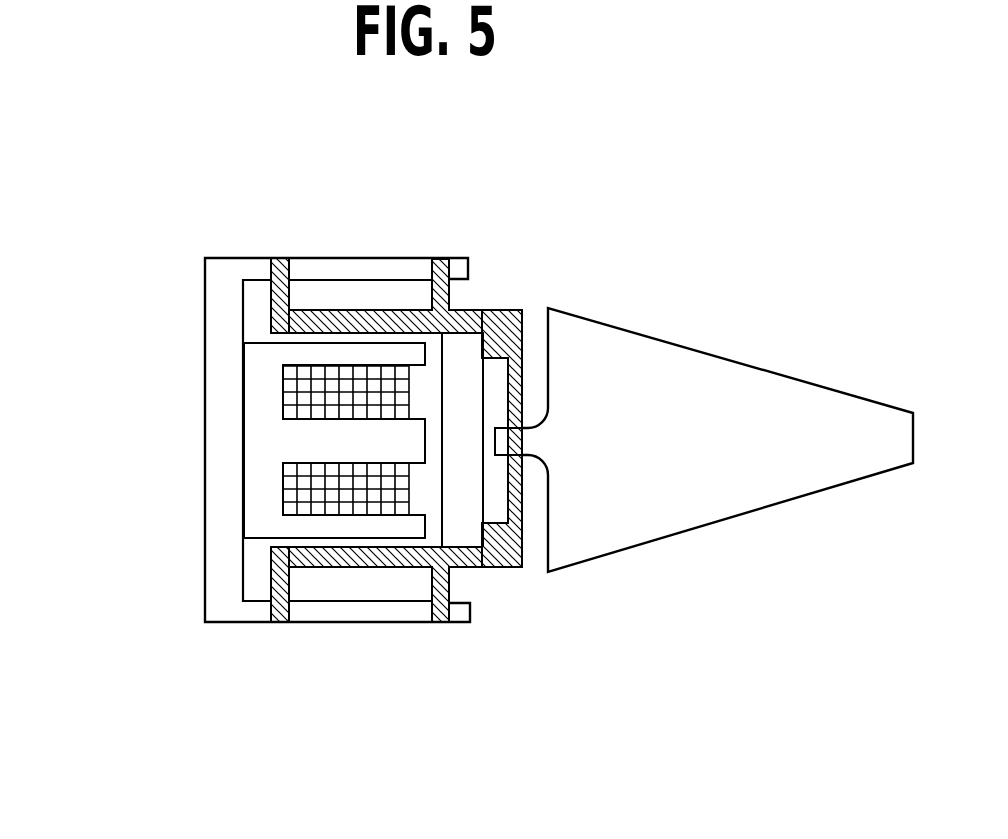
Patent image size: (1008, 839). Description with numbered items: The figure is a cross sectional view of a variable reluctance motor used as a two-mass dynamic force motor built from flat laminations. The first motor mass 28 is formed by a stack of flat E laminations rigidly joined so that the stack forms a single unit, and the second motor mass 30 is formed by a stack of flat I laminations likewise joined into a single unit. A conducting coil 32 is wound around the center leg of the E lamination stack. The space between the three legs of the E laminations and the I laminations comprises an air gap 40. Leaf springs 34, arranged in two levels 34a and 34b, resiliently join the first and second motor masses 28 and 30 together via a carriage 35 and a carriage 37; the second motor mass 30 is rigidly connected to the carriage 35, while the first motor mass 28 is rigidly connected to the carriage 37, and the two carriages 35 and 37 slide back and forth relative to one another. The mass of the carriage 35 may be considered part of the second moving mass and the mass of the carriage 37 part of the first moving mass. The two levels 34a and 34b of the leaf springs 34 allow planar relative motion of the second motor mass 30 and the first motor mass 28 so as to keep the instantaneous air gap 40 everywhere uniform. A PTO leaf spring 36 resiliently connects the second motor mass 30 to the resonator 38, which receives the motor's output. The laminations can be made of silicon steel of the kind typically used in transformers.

The first motor mass 28 is at (263, 455).
The second motor mass 30 is at (460, 364).
The conducting coil 32 is at (285, 392).
The leaf springs 34 is at (290, 296).
The leaf spring level 34a is at (452, 296).
The leaf spring level 34b is at (290, 296).
The carriage 35 is at (358, 553).
The PTO leaf spring 36 is at (523, 512).
The carriage 37 is at (218, 625).
The resonator 38 is at (747, 363).
The air gap 40 is at (470, 568).